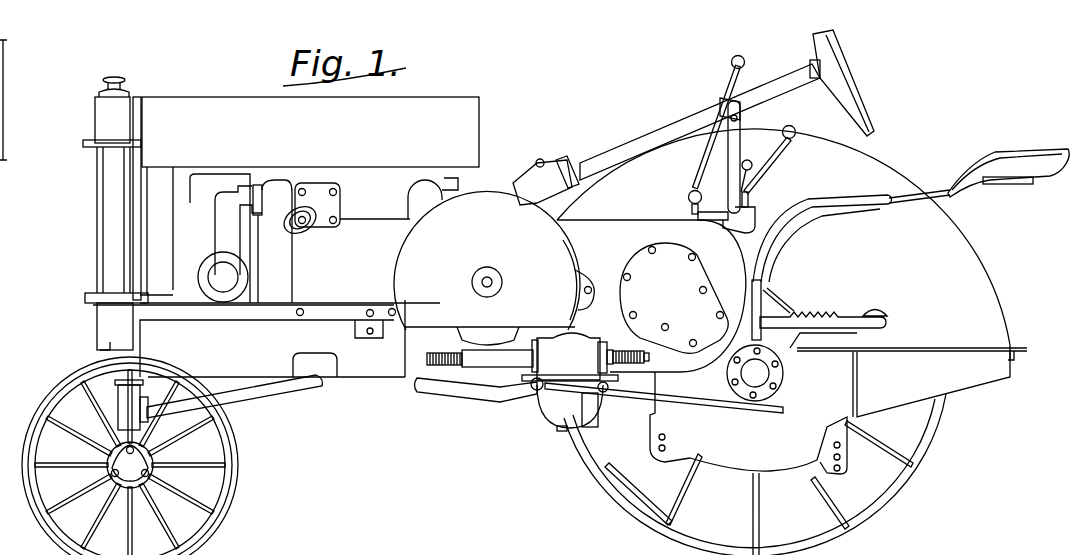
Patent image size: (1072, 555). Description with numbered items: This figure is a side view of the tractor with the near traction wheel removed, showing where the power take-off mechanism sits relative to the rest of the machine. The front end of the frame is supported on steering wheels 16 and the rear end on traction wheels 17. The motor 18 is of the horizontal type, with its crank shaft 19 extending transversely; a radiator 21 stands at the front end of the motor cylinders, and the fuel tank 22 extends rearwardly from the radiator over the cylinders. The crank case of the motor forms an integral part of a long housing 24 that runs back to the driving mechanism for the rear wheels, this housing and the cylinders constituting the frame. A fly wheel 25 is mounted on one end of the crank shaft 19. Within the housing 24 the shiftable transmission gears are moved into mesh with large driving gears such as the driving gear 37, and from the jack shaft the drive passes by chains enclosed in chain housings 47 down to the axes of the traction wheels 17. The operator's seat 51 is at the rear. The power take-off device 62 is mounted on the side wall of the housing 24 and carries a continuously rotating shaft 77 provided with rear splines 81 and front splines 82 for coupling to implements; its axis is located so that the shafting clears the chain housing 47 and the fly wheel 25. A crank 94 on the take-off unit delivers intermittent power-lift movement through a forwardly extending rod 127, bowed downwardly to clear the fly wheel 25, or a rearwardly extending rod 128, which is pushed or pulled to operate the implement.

The steering wheels 16 is at (55, 395).
The traction wheels 17 is at (885, 506).
The motor 18 is at (369, 215).
The crank shaft 19 is at (490, 277).
The radiator 21 is at (98, 198).
The fuel tank 22 is at (185, 108).
The housing 24 is at (647, 230).
The fly wheel 25 is at (402, 268).
The driving gear 37 is at (492, 551).
The chain housings 47 is at (700, 452).
The seat 51 is at (1012, 156).
The power take-off device 62 is at (578, 352).
The shaft 77 is at (617, 353).
The splines 81 is at (630, 357).
The splines 82 is at (428, 363).
The crank 94 is at (547, 397).
The forwardly extending rod 127 is at (472, 400).
The rearwardly extending rod 128 is at (652, 403).